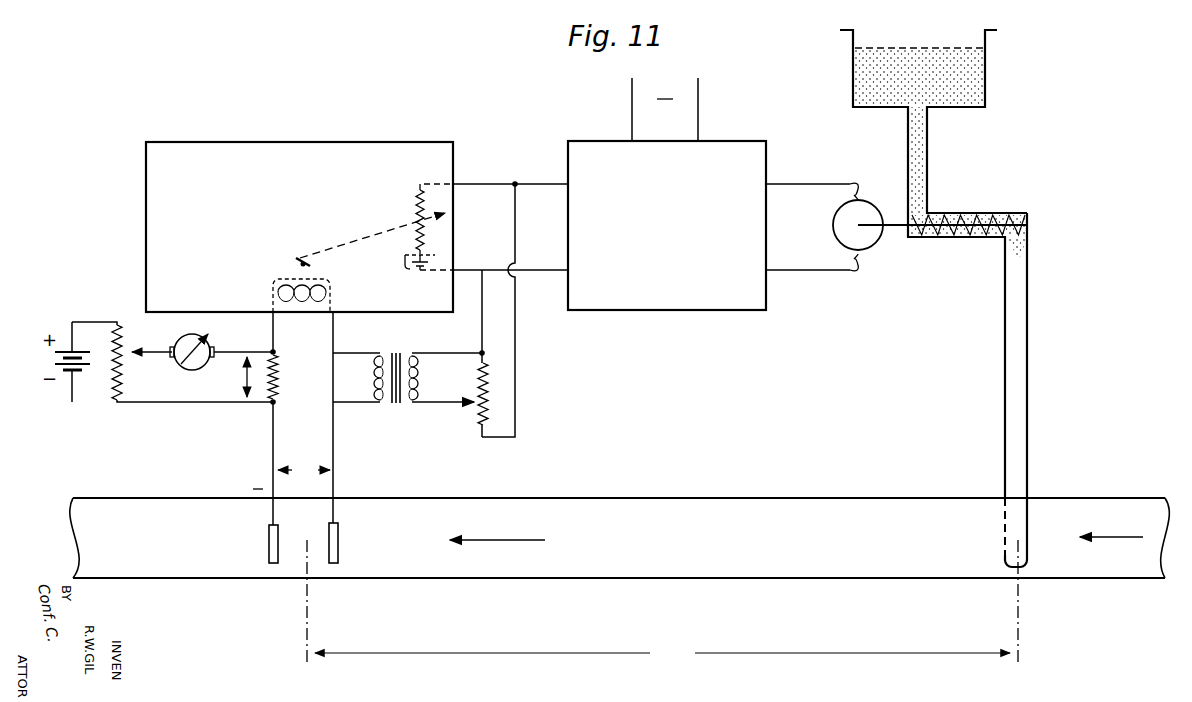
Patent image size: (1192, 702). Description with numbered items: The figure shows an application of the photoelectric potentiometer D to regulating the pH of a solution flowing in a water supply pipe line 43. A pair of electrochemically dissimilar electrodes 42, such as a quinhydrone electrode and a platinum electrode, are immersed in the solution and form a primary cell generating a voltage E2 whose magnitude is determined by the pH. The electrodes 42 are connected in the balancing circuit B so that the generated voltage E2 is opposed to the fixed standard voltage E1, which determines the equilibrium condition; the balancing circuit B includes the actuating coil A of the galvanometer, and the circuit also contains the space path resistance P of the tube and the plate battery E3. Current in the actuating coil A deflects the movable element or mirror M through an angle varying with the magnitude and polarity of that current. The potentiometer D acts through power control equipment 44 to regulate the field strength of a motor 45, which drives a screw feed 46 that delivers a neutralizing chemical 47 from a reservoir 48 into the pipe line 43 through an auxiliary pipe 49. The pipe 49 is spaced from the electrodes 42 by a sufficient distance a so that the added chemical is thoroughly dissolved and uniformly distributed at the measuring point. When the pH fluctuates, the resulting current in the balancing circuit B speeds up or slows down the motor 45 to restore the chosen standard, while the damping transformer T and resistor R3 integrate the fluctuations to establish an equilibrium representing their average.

The photoelectric potentiometer D is at (287, 150).
The space path resistance P is at (416, 198).
The plate battery E3 is at (407, 276).
The movable element or mirror M is at (298, 262).
The actuating coil A is at (302, 296).
The balancing circuit B is at (273, 436).
The damping transformer T is at (396, 352).
The damping resistor R3 is at (450, 400).
The fixed voltage E1 is at (251, 377).
The generated voltage E2 is at (307, 479).
The electrodes 42 is at (329, 529).
The pipe line 43 is at (610, 578).
The power control equipment 44 is at (683, 300).
The motor 45 is at (880, 242).
The screw feed 46 is at (985, 213).
The neutralizing chemical 47 is at (977, 69).
The reservoir 48 is at (985, 98).
The auxiliary pipe 49 is at (1028, 386).
The distance a is at (662, 602).